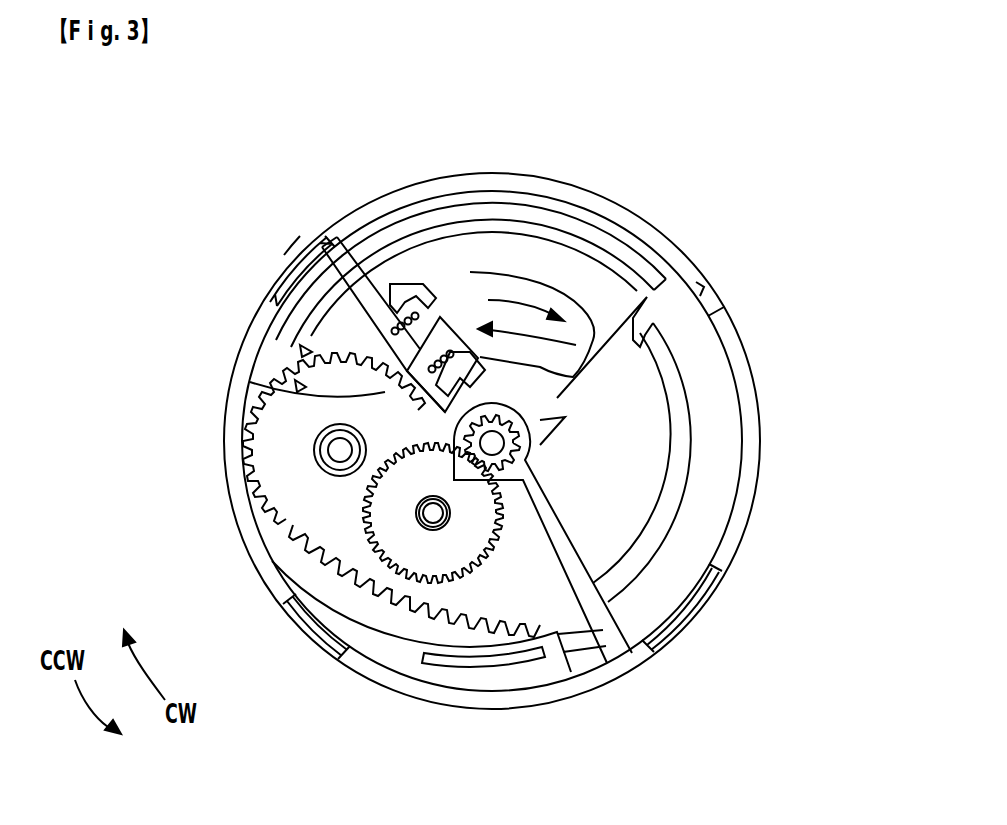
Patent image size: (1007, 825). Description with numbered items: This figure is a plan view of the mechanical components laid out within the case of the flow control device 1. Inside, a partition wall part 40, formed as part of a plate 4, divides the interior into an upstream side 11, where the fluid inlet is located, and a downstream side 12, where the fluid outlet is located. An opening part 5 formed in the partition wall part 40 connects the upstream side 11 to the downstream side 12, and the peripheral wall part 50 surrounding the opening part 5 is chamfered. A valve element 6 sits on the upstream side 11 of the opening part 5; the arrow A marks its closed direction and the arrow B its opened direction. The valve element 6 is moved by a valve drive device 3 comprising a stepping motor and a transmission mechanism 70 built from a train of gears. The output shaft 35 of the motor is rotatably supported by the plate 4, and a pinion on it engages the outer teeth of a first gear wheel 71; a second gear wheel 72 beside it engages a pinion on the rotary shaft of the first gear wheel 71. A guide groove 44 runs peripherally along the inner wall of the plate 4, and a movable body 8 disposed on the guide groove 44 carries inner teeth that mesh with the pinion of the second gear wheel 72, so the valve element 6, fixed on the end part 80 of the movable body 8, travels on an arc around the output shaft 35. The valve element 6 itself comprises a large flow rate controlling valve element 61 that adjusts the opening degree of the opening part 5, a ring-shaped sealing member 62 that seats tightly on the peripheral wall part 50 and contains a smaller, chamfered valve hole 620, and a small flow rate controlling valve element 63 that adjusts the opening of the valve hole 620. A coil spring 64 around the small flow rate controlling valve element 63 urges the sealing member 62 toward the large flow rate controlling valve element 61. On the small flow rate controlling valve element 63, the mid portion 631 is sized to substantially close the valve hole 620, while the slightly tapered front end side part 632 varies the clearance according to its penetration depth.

The timepiece movement 1 is at (808, 362).
The valve drive device 3 is at (258, 598).
The plate 4 is at (628, 667).
The opening part 5 is at (556, 423).
The valve element 6 is at (319, 248).
The movable body 8 is at (310, 294).
The upstream side 11 is at (593, 290).
The downstream side 12 is at (712, 583).
The output shaft 35 is at (482, 456).
The partition wall part 40 is at (623, 517).
The guide groove 44 is at (533, 216).
The peripheral wall part 50 is at (650, 318).
The large flow rate controlling valve element 61 is at (432, 285).
The sealing member 62 is at (383, 283).
The small flow rate controlling valve element 63 is at (325, 290).
The coil spring 64 is at (337, 233).
The transmission mechanism 70 is at (331, 495).
The first gear wheel 71 is at (400, 532).
The second gear wheel 72 is at (303, 497).
The end part 80 is at (307, 297).
The valve hole 620 is at (480, 272).
The mid portion 631 is at (305, 350).
The front end side part 632 is at (300, 385).